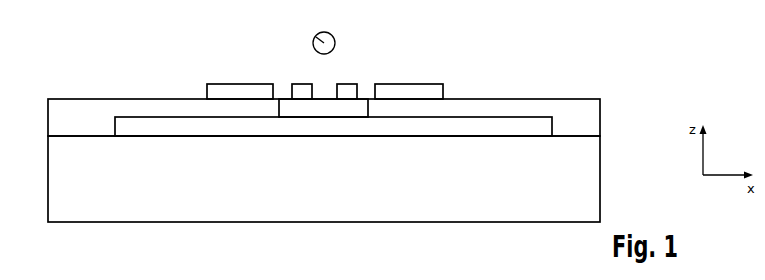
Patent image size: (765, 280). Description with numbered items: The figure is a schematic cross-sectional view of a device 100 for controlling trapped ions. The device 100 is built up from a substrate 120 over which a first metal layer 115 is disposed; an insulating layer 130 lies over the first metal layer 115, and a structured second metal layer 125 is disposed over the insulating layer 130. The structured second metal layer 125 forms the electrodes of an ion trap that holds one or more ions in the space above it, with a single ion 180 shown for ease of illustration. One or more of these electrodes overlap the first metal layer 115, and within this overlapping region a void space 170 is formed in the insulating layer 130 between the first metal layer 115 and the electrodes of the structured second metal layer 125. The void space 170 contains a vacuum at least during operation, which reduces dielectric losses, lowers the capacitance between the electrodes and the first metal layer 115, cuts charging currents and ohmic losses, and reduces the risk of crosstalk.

The device for controlling trapped ions 100 is at (361, 111).
The first metal layer 115 is at (161, 125).
The substrate 120 is at (590, 182).
The structured second metal layer 125 is at (300, 88).
The insulating layer 130 is at (590, 128).
The void space 170 is at (330, 108).
The ion 180 is at (313, 40).